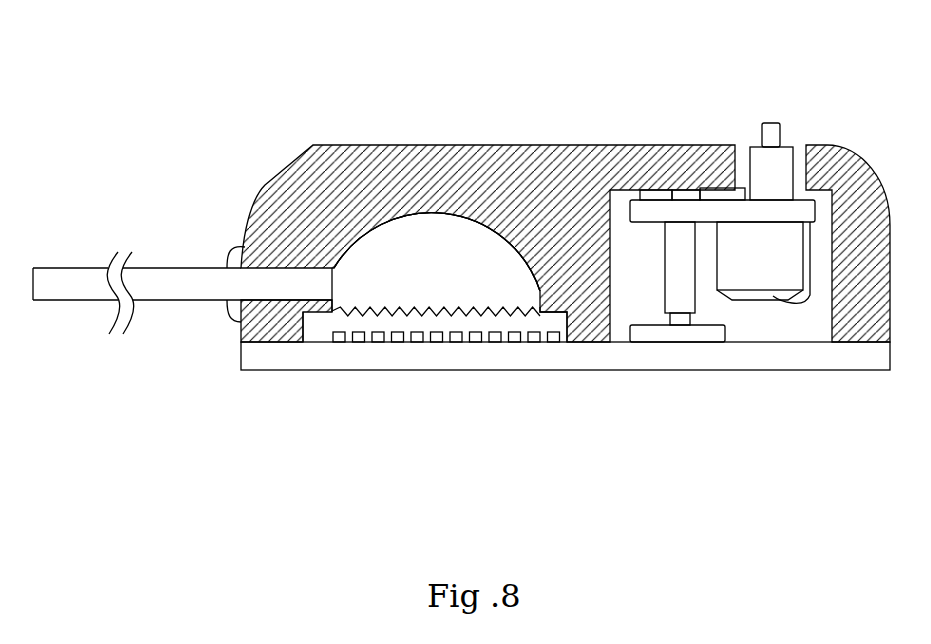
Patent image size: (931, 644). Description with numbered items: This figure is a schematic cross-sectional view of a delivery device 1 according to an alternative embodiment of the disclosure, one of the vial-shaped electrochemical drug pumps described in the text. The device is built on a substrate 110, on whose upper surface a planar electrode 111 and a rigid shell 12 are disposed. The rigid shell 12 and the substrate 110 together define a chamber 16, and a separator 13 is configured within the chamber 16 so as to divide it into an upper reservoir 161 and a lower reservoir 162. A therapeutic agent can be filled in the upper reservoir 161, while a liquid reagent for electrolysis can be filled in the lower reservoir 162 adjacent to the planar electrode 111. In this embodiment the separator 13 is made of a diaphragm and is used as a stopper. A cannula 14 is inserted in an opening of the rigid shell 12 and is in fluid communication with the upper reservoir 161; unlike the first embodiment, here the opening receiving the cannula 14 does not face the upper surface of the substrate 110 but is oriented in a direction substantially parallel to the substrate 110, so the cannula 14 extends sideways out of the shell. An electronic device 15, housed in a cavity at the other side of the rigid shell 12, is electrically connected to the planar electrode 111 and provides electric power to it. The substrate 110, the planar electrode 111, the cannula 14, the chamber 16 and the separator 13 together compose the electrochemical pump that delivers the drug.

The delivery device 1 is at (824, 45).
The rigid shell 12 is at (264, 184).
The separator 13 is at (500, 322).
The cannula 14 is at (72, 294).
The electronic device 15 is at (773, 265).
The chamber 16 is at (460, 268).
The substrate 110 is at (680, 352).
The planar electrode 111 is at (457, 335).
The upper reservoir 161 is at (415, 245).
The lower reservoir 162 is at (387, 318).